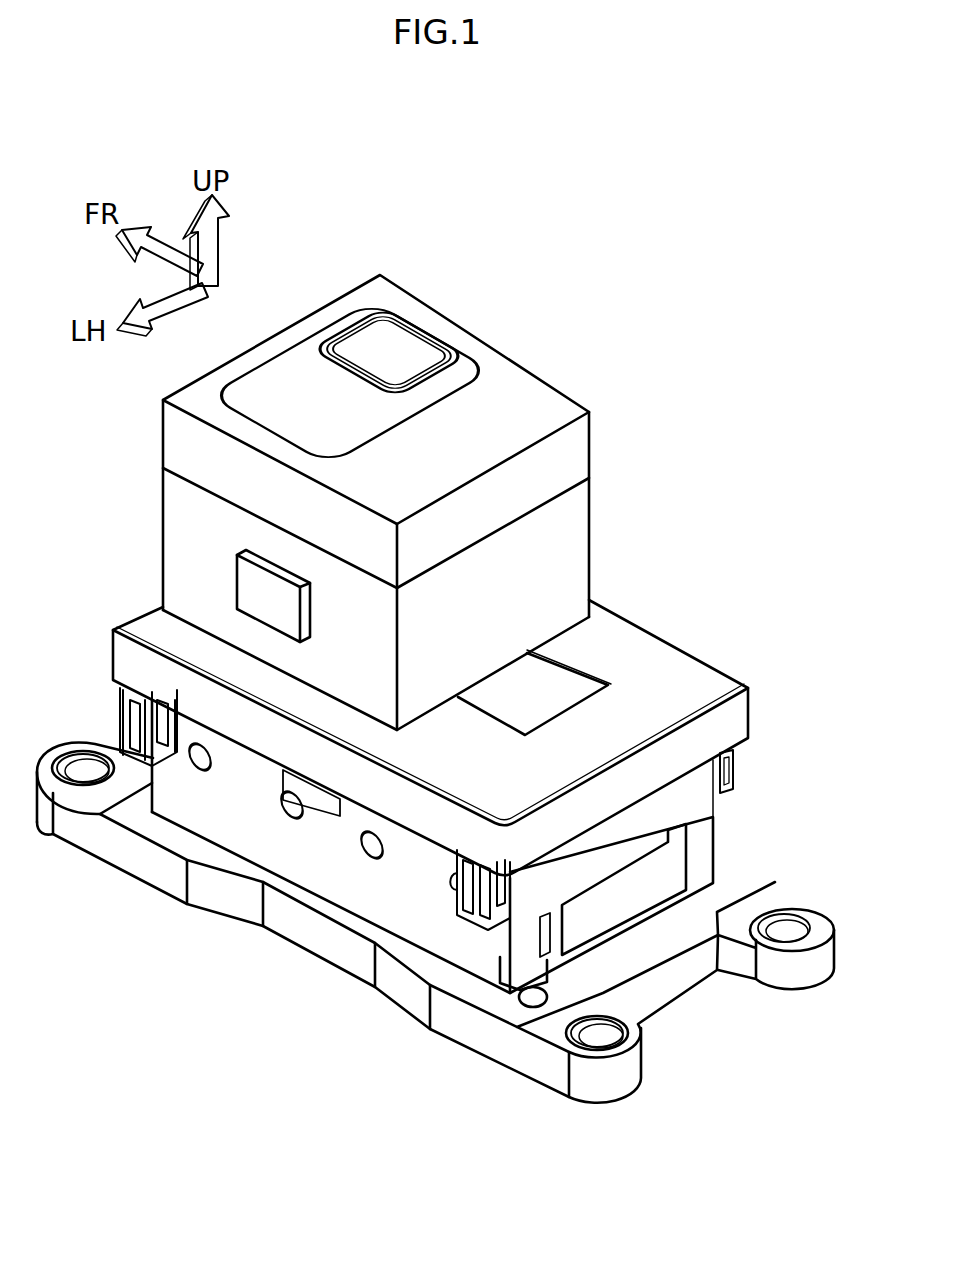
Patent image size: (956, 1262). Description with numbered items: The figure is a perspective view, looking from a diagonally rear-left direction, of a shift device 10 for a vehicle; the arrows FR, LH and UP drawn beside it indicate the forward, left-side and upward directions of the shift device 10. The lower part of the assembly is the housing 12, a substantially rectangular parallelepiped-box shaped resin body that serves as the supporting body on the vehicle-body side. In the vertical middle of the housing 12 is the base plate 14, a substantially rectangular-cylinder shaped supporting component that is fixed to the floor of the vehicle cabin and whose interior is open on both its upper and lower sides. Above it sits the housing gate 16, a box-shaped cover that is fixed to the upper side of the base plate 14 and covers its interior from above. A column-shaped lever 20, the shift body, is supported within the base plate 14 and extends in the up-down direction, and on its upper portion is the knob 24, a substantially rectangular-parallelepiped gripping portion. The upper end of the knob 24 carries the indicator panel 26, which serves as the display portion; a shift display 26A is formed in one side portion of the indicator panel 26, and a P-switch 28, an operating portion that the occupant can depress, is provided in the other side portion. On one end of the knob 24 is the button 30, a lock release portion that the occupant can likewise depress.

The shift device 10 is at (637, 360).
The housing 12 is at (134, 610).
The base plate 14 is at (718, 826).
The housing gate 16 is at (697, 658).
The lever 20 is at (440, 481).
The knob 24 is at (592, 490).
The indicator panel 26 is at (313, 338).
The shift display 26A is at (303, 377).
The P-switch 28 is at (388, 338).
The button 30 is at (240, 587).